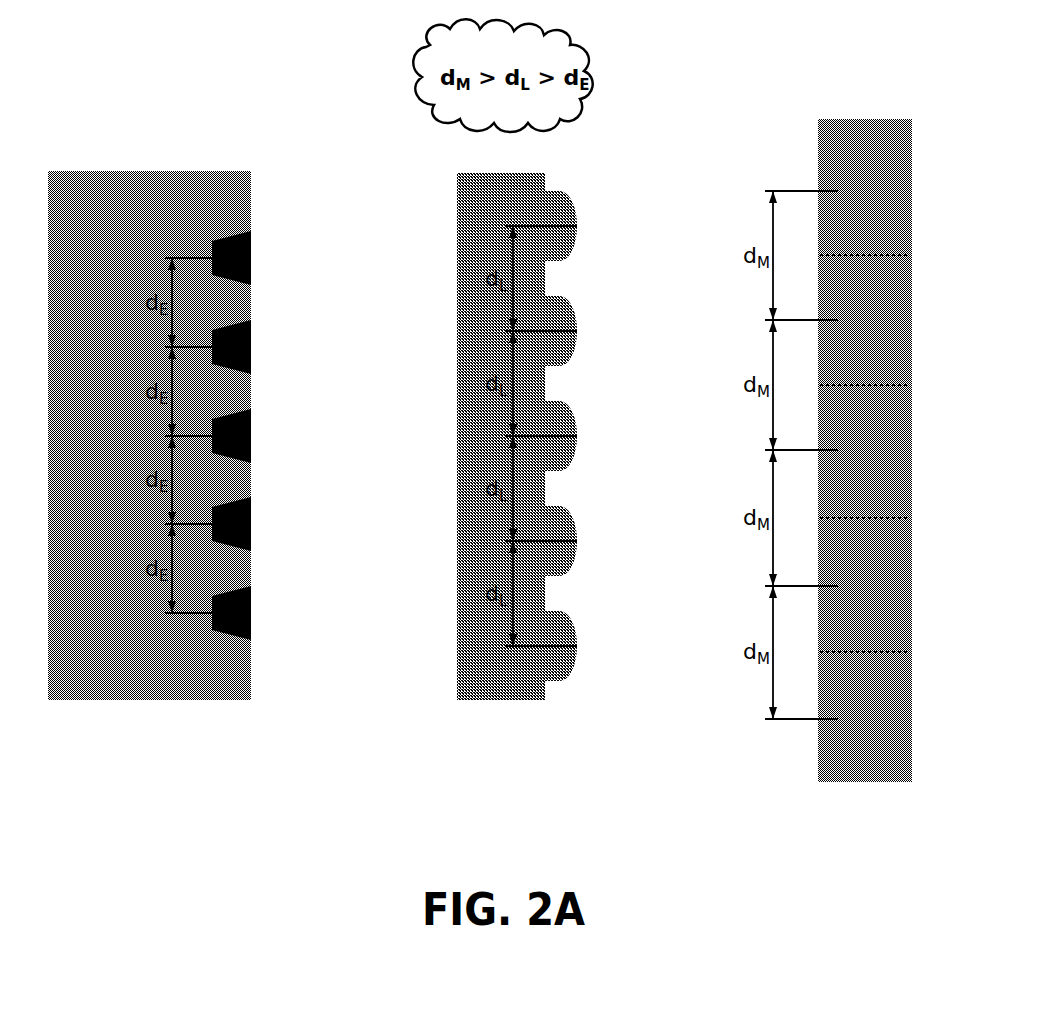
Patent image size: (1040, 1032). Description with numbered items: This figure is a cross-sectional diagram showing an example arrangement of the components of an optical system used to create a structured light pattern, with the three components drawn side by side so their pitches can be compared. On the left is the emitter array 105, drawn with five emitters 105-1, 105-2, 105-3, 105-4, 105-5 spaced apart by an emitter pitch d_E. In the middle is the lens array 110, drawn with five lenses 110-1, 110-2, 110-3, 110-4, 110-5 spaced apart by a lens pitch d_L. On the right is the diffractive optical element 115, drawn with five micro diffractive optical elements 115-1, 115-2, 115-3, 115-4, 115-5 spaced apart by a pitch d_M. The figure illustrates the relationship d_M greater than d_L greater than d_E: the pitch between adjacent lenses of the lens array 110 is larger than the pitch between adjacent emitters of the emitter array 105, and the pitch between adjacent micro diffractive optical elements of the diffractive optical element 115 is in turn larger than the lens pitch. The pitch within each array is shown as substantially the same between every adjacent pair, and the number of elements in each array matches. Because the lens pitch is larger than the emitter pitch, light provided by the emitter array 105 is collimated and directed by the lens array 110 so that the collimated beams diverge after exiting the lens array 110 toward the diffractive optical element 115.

The emitter array 105 is at (95, 203).
The emitter 105-1 is at (253, 258).
The emitter 105-2 is at (253, 347).
The emitter 105-3 is at (253, 436).
The emitter 105-4 is at (253, 524).
The emitter 105-5 is at (253, 613).
The lens array 110 is at (505, 203).
The lens 110-1 is at (579, 205).
The lens 110-2 is at (579, 310).
The lens 110-3 is at (579, 415).
The lens 110-4 is at (579, 520).
The lens 110-5 is at (579, 625).
The diffractive optical element 115 is at (867, 153).
The micro diffractive optical element 115-1 is at (904, 200).
The micro diffractive optical element 115-2 is at (904, 320).
The micro diffractive optical element 115-3 is at (904, 440).
The micro diffractive optical element 115-4 is at (904, 585).
The micro diffractive optical element 115-5 is at (904, 722).